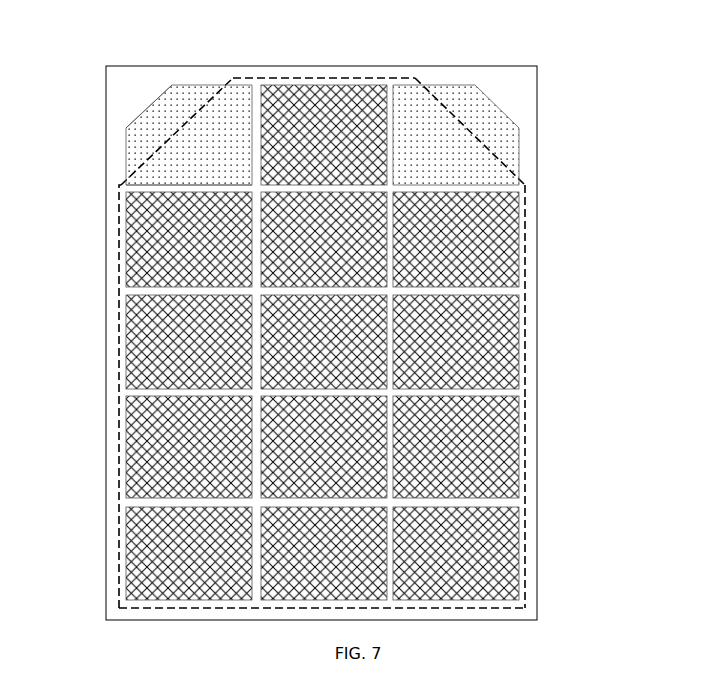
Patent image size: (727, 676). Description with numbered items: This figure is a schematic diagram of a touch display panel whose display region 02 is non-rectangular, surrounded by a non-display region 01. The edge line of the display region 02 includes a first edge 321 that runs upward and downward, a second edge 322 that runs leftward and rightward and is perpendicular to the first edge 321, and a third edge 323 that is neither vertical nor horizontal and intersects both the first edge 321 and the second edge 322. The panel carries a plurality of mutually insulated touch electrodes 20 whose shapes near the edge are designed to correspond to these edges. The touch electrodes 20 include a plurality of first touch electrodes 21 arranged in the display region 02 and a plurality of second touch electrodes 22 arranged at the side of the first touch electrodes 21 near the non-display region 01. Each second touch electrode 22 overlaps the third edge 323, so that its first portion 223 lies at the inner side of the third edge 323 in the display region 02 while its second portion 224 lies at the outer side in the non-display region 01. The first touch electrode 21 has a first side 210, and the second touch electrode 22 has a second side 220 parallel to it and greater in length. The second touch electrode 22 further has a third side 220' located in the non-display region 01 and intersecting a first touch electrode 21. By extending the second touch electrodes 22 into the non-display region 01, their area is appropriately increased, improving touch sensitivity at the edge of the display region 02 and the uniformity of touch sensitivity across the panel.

The non-display region 01 is at (530, 317).
The display region 02 is at (508, 393).
The touch electrodes 20 is at (594, 158).
The first touch electrode 21 is at (475, 255).
The second touch electrode 22 is at (475, 163).
The first side 210 is at (175, 287).
The second side 220 is at (148, 181).
The third side 220' is at (108, 100).
The first portion 223 is at (239, 112).
The second portion 224 is at (152, 132).
The first edge 321 is at (525, 492).
The second edge 322 is at (330, 63).
The third edge 323 is at (450, 113).